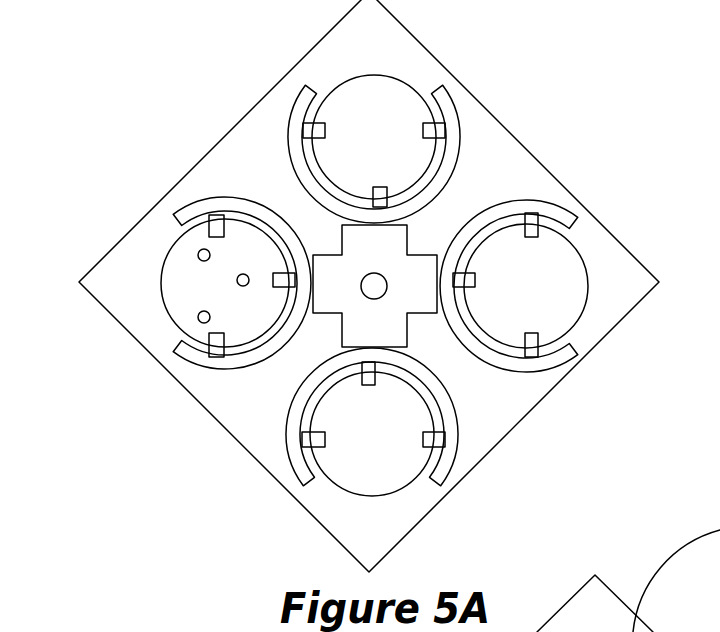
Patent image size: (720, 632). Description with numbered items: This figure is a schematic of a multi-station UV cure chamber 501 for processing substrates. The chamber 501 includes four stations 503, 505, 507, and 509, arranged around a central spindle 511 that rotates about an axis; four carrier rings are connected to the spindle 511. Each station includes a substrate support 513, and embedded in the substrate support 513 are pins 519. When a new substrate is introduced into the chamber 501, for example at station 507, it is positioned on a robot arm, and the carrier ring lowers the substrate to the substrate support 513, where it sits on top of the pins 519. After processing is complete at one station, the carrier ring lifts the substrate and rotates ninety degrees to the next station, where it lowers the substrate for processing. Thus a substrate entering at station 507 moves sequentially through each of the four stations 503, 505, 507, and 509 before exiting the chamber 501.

The chamber 501 is at (525, 102).
The station 503 is at (165, 311).
The station 505 is at (567, 212).
The station 507 is at (395, 459).
The station 509 is at (444, 95).
The spindle 511 is at (333, 267).
The substrate support 513 is at (353, 465).
The pins 519 is at (237, 280).